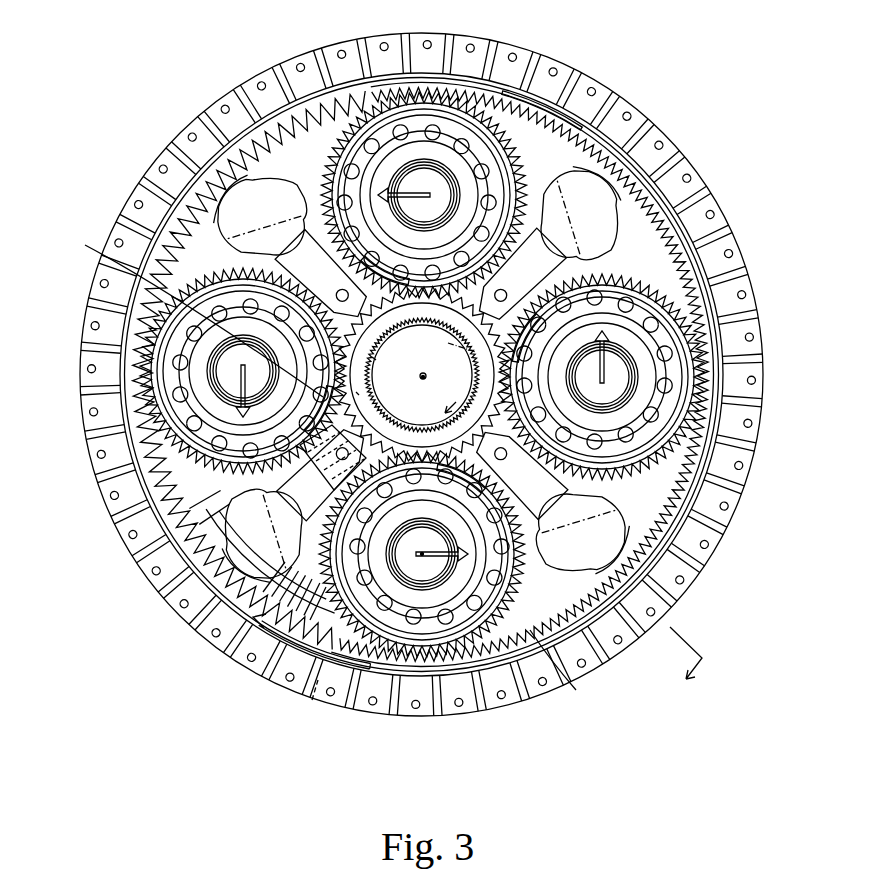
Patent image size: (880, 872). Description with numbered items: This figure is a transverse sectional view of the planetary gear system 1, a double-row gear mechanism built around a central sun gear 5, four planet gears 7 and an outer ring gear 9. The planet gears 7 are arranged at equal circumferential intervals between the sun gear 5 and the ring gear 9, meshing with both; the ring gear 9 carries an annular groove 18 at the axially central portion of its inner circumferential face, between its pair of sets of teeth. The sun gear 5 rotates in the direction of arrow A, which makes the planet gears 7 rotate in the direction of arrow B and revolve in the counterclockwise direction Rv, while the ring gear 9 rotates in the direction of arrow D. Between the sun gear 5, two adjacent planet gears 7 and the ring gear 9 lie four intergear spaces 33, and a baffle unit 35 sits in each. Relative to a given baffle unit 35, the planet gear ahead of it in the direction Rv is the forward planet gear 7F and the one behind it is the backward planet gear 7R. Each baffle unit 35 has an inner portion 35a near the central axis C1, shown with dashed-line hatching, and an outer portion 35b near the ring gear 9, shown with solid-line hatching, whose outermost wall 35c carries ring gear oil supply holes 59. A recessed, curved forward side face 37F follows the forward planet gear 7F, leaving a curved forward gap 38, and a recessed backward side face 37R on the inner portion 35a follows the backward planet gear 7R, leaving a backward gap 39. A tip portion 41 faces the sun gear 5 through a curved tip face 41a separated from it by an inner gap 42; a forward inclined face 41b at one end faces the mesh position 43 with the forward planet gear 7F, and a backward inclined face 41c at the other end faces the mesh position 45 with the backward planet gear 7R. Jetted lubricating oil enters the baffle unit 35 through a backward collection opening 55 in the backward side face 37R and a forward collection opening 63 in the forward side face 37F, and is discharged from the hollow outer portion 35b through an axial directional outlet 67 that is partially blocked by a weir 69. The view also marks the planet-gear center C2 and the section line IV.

The planetary gear system 1 is at (222, 45).
The sun gear 5 is at (422, 300).
The planet gear 7 is at (668, 270).
The backward planet gear 7R is at (176, 262).
The forward planet gear 7F is at (335, 650).
The ring gear 9 is at (492, 86).
The annular groove 18 is at (640, 173).
The intergear space 33 is at (513, 617).
The baffle unit 35 is at (272, 600).
The inner portion 35a is at (290, 440).
The outer portion 35b is at (250, 528).
The wall 35c is at (300, 555).
The backward side face 37R is at (235, 505).
The forward side face 37F is at (315, 630).
The forward gap 38 is at (306, 530).
The backward gap 39 is at (305, 405).
The tip portion 41 is at (405, 445).
The tip face 41a is at (357, 408).
The forward inclined face 41b is at (356, 432).
The backward inclined face 41c is at (372, 357).
The inner gap 42 is at (356, 392).
The mesh position 43 is at (405, 448).
The mesh position 45 is at (374, 363).
The backward collection opening 55 is at (360, 612).
The ring gear oil supply hole 59 is at (265, 598).
The forward collection opening 63 is at (330, 600).
The axial directional outlet 67 is at (345, 580).
The weir 69 is at (250, 560).
The rotation direction of sun gear A is at (459, 345).
The rotation direction of planet gears B is at (329, 470).
The central axis C1 is at (426, 378).
The center of planet gear C2 is at (421, 556).
The rotation direction of ring gear D is at (312, 700).
The revolution direction Rv is at (452, 575).
The section line IV is at (588, 533).